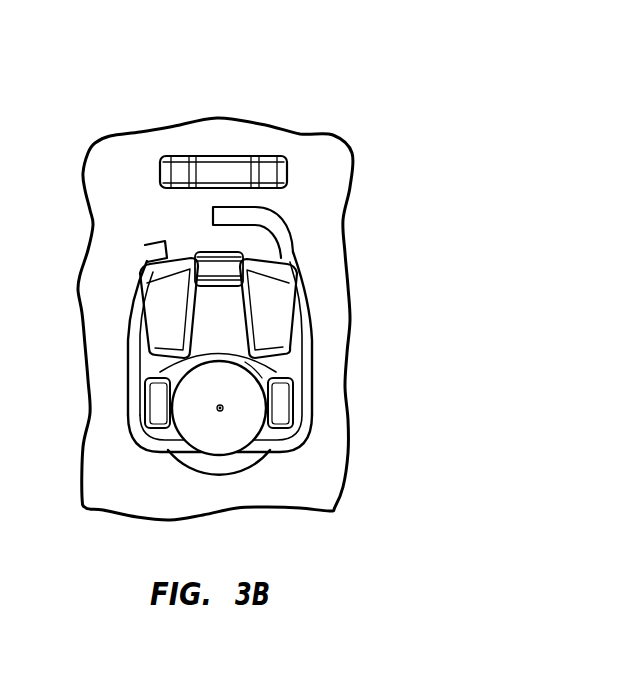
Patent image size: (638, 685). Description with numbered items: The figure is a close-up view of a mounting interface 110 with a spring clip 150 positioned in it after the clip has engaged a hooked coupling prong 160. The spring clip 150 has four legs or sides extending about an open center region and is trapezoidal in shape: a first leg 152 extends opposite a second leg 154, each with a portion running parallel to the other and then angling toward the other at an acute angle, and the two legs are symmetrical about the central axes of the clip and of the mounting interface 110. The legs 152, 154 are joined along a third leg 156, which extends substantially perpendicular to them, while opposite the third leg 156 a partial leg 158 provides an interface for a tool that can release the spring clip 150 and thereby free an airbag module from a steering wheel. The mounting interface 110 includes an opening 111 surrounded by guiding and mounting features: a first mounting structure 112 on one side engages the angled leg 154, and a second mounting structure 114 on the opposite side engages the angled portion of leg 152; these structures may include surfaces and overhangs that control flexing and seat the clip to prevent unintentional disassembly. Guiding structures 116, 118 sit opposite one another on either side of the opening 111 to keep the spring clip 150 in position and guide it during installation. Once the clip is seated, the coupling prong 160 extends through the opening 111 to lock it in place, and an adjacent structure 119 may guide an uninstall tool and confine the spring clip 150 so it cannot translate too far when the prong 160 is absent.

The mounting interface 110 is at (336, 125).
The adjacent structure 119 is at (223, 167).
The partial side/leg 158 is at (250, 210).
The second leg/side 154 is at (306, 325).
The first leg/side 152 is at (128, 395).
The spring clip 150 is at (308, 432).
The second mounting structure 114 is at (157, 303).
The first mounting structure 112 is at (288, 287).
The opening 111 is at (253, 373).
The coupling prong 160 is at (228, 438).
The third side/leg 156 is at (277, 440).
The guiding/mounting structure 118 is at (153, 402).
The guiding/mounting structure 116 is at (287, 402).